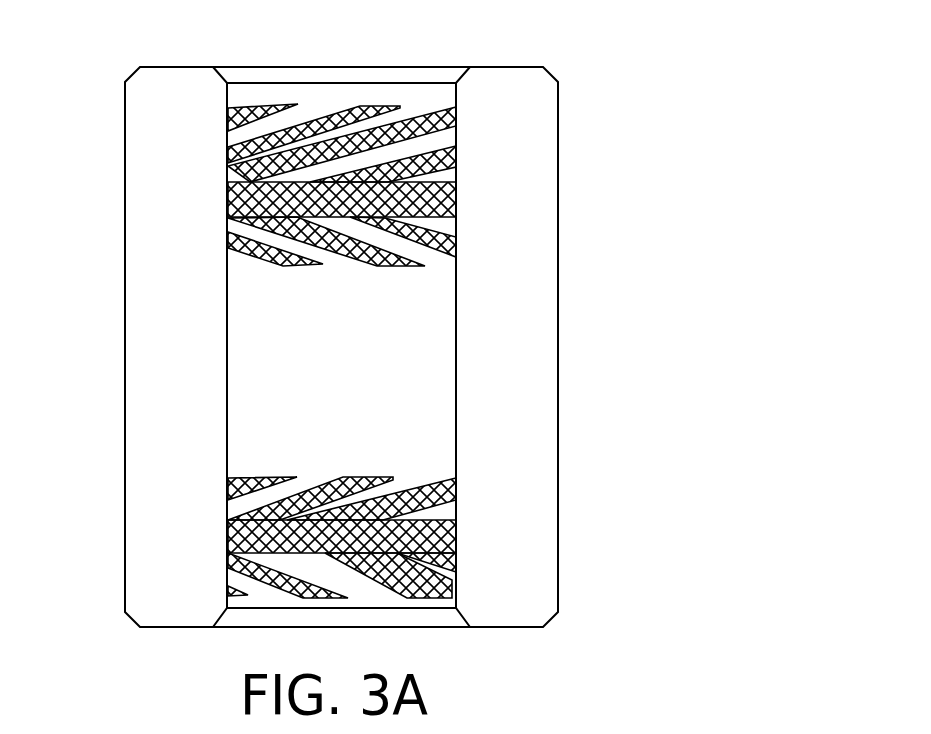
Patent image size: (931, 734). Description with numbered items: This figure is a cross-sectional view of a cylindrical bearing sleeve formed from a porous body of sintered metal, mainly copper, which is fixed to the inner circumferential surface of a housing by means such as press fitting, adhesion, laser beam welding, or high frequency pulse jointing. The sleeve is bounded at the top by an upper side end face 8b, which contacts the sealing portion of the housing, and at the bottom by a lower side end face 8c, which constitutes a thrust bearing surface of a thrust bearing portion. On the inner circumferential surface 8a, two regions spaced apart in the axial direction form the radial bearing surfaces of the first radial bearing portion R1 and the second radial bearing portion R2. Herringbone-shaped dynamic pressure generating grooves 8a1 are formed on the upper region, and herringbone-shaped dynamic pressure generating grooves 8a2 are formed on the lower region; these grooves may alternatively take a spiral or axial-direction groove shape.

The inner circumferential surface 8a is at (458, 348).
The dynamic pressure generating grooves 8a1 is at (296, 113).
The dynamic pressure generating grooves 8a2 is at (290, 486).
The upper side end face 8b is at (537, 68).
The lower side end face 8c is at (498, 629).
The first radial bearing portion R1 is at (225, 178).
The second radial bearing portion R2 is at (222, 540).